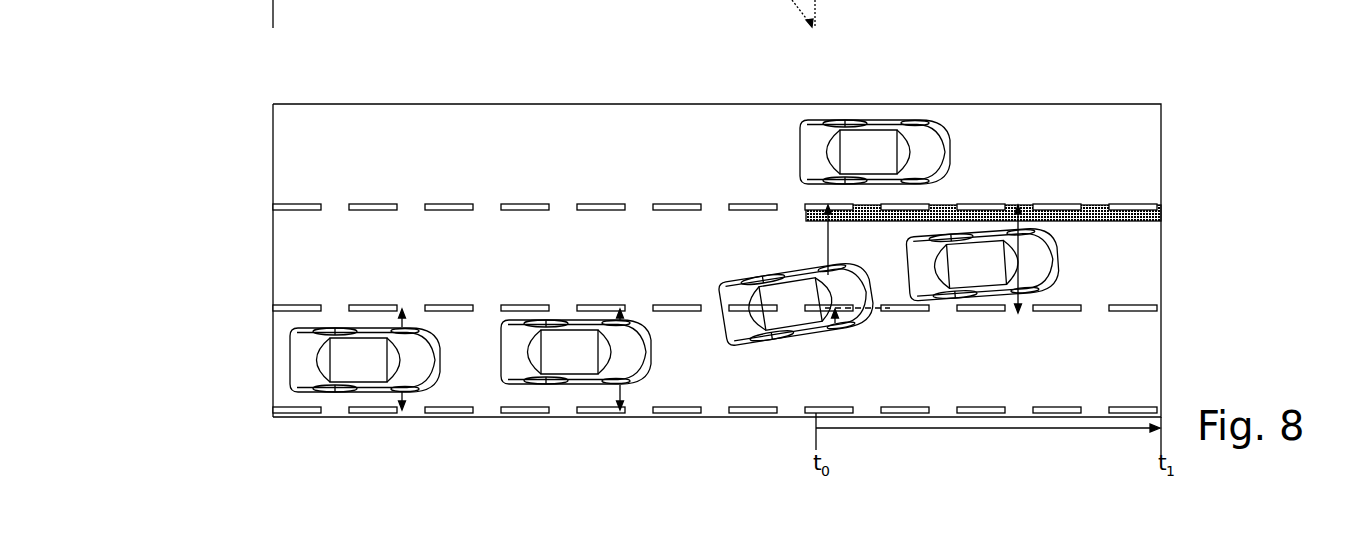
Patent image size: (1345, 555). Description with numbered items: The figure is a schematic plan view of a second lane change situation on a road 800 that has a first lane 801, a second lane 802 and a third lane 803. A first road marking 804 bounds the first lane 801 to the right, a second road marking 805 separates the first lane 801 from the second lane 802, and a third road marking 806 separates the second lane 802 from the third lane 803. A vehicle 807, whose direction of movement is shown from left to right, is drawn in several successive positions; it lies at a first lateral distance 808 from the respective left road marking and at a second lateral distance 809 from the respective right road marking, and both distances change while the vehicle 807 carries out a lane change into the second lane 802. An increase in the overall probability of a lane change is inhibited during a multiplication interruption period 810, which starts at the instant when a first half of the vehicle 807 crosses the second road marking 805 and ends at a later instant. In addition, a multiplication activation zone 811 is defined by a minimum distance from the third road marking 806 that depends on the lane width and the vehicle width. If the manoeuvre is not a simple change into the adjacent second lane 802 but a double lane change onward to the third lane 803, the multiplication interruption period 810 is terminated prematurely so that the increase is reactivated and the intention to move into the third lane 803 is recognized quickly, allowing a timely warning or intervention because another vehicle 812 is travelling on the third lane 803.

The road 800 is at (1046, 86).
The first lane 801 is at (1150, 350).
The second lane 802 is at (1150, 270).
The third lane 803 is at (1150, 152).
The first road marking 804 is at (273, 405).
The second road marking 805 is at (273, 305).
The third road marking 806 is at (273, 204).
The vehicle 807 is at (430, 358).
The first lateral distance 808 is at (405, 322).
The second lateral distance 809 is at (399, 398).
The multiplication interruption period 810 is at (944, 438).
The multiplication activation zone 811 is at (1100, 223).
The other vehicle 812 is at (938, 118).